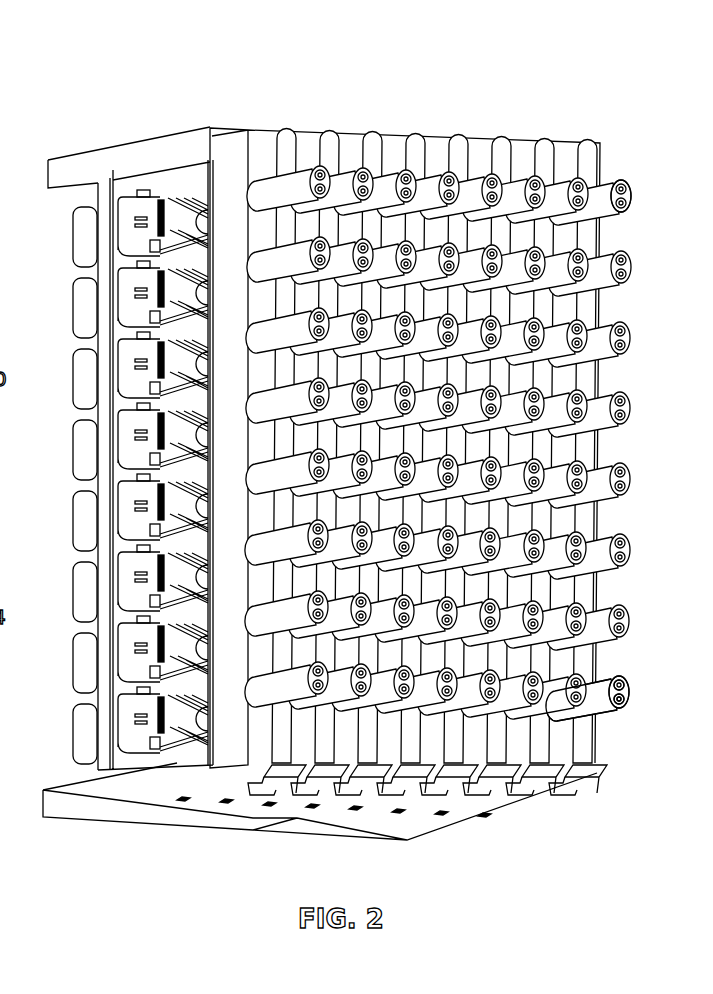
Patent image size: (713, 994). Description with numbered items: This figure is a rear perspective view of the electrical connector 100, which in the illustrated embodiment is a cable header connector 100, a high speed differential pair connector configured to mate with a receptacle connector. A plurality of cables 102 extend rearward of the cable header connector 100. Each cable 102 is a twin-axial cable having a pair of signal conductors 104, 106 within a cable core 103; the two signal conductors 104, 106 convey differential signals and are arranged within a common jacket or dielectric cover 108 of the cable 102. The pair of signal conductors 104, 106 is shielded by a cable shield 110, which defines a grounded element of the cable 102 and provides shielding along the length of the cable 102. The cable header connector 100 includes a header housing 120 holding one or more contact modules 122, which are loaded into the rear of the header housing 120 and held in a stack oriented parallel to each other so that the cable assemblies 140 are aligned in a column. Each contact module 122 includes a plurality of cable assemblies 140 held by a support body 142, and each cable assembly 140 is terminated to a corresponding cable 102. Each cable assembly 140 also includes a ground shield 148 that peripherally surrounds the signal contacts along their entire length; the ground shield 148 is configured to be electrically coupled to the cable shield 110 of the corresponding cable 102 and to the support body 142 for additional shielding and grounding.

The electrical connector 100 is at (412, 72).
The cable 102 is at (604, 210).
The cable core 103 is at (634, 183).
The signal conductor 104 is at (620, 678).
The signal conductor 106 is at (623, 710).
The dielectric cover 108 is at (628, 695).
The cable shield 110 is at (625, 698).
The header housing 120 is at (133, 148).
The contact module 122 is at (263, 122).
The cable assembly 140 is at (78, 504).
The support body 142 is at (262, 742).
The ground shield 148 is at (85, 255).